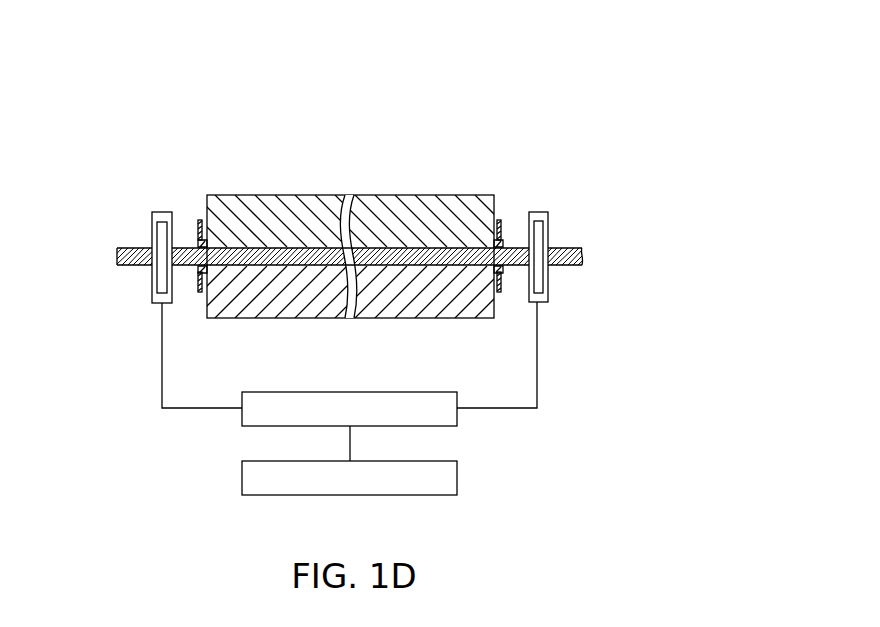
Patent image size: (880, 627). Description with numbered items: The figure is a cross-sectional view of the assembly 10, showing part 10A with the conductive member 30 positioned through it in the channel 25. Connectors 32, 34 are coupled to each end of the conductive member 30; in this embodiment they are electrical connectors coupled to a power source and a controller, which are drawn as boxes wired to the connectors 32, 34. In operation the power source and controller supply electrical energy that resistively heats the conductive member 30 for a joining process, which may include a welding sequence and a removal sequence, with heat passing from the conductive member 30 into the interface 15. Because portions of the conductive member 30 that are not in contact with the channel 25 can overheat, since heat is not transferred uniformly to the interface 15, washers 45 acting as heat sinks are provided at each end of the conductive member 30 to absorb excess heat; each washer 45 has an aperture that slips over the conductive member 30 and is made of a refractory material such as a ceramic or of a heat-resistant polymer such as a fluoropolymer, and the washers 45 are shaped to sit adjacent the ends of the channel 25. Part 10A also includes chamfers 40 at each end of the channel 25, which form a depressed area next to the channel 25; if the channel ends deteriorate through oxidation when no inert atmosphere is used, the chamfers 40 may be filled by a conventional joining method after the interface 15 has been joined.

The assembly 10 is at (498, 130).
The part 10A is at (300, 193).
The interface 15 is at (510, 334).
The channel 25 is at (394, 267).
The conductive member 30 is at (583, 252).
The connector 32 is at (543, 303).
The connector 34 is at (157, 303).
The chamfers 40 is at (218, 234).
The washers 45 is at (199, 221).